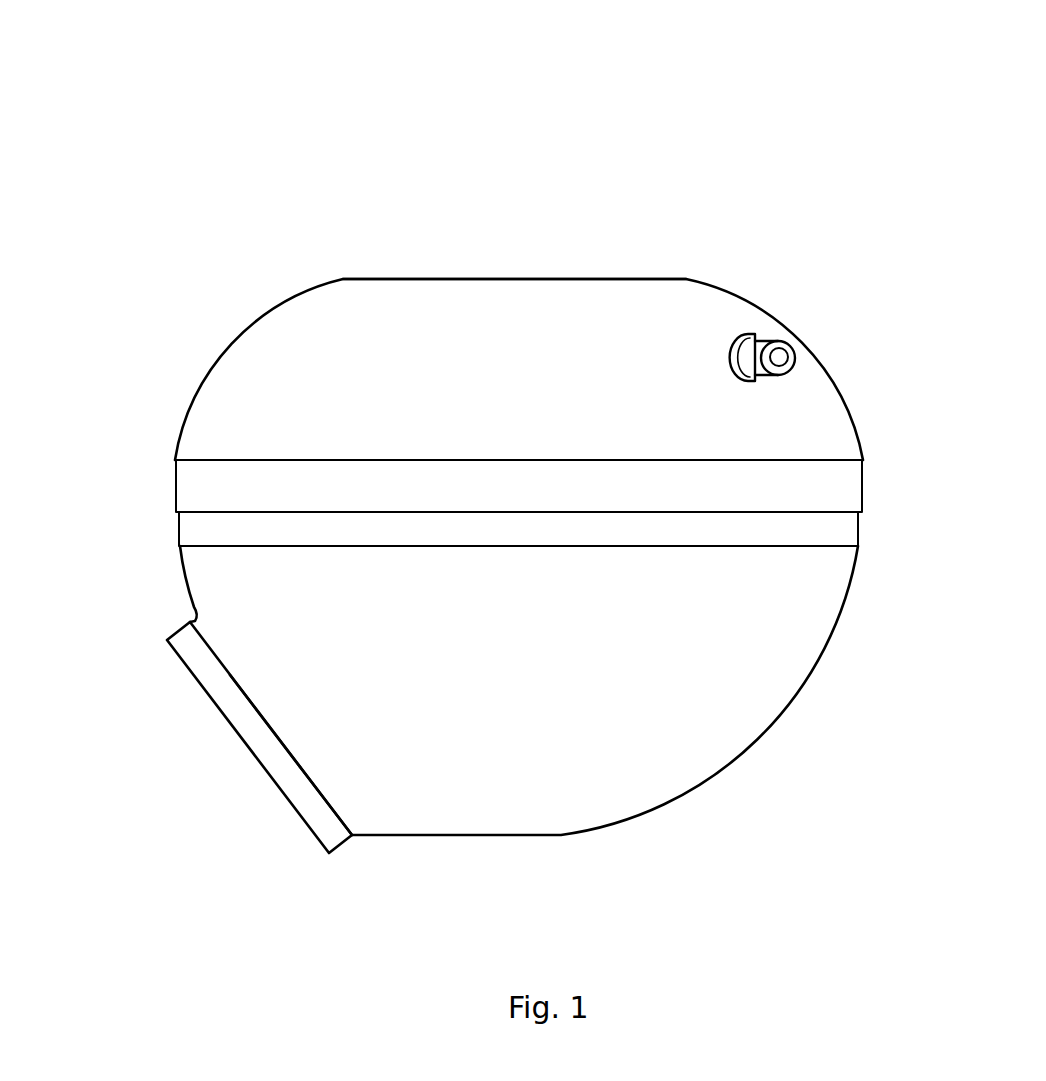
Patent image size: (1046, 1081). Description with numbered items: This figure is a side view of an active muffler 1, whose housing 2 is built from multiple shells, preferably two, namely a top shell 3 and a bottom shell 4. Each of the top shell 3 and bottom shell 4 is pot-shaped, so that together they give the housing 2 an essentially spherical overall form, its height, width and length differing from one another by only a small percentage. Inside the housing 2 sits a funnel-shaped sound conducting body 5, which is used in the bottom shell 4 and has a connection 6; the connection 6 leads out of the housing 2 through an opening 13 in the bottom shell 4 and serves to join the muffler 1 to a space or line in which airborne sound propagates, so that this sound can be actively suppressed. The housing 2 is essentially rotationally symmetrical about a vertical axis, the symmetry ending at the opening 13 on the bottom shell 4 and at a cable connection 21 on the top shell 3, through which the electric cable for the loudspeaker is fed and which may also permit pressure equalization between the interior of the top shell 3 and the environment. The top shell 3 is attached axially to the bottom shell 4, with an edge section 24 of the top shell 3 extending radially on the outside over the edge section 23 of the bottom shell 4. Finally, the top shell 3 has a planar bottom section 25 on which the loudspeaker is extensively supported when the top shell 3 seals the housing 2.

The active muffler 1 is at (517, 475).
The housing 2 is at (517, 496).
The top shell 3 is at (573, 318).
The bottom shell 4 is at (708, 722).
The sound conducting body 5 is at (215, 780).
The connection 6 is at (315, 803).
The opening 13 is at (270, 730).
The cable connection 21 is at (777, 353).
The edge section of the bottom shell 23 is at (215, 537).
The edge section of the top shell 24 is at (205, 502).
The bottom section 25 is at (468, 278).